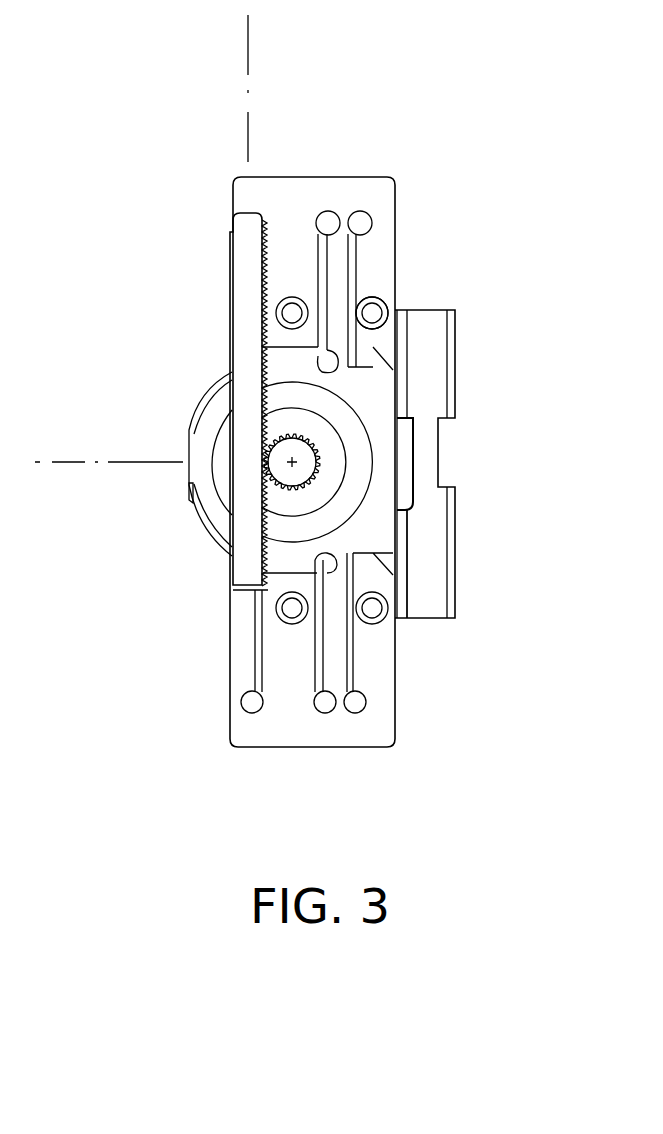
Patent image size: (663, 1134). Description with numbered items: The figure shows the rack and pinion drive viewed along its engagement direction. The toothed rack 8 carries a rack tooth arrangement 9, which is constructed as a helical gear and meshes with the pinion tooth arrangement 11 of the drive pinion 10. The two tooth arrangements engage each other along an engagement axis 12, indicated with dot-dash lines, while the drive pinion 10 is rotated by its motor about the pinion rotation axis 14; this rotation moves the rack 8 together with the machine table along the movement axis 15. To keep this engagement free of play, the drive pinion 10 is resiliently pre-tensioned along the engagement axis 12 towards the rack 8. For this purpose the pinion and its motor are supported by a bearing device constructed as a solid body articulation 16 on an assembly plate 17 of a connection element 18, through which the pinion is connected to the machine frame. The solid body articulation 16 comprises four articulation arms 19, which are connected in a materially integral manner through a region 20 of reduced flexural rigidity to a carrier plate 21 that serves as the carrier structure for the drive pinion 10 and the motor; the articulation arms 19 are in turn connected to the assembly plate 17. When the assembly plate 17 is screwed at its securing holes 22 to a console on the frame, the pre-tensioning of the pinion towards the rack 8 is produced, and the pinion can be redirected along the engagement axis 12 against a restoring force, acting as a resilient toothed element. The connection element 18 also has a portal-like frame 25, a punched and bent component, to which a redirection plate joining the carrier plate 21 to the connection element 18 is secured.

The toothed rack 8 is at (226, 229).
The rack tooth arrangement 9 is at (265, 222).
The drive pinion 10 is at (310, 433).
The pinion tooth arrangement 11 is at (302, 492).
The engagement axis 12 is at (75, 462).
The pinion rotation axis 14 is at (300, 462).
The movement axis 15 is at (253, 43).
The solid body articulation 16 is at (330, 194).
The assembly plate 17 is at (303, 716).
The connection element 18 is at (464, 328).
The articulation arms 19 is at (322, 263).
The region of reduced flexural rigidity 20 is at (340, 222).
The carrier plate 21 is at (200, 530).
The securing holes 22 is at (372, 313).
The portal-like frame 25 is at (463, 530).